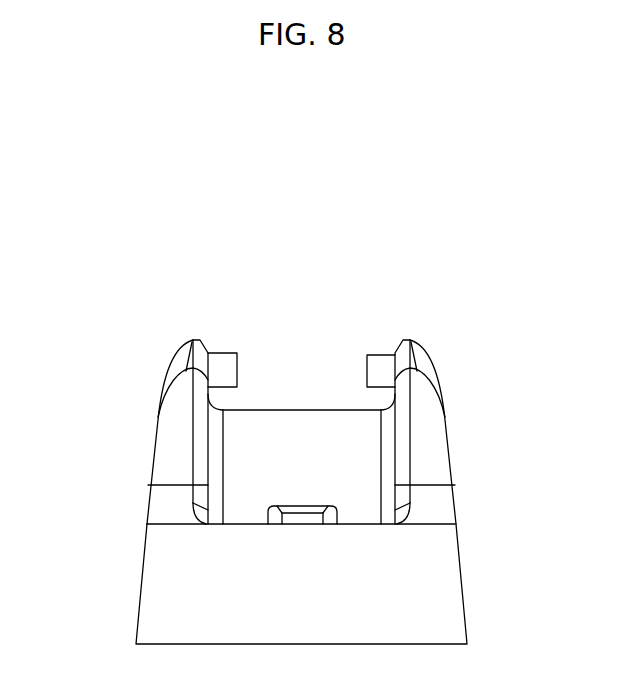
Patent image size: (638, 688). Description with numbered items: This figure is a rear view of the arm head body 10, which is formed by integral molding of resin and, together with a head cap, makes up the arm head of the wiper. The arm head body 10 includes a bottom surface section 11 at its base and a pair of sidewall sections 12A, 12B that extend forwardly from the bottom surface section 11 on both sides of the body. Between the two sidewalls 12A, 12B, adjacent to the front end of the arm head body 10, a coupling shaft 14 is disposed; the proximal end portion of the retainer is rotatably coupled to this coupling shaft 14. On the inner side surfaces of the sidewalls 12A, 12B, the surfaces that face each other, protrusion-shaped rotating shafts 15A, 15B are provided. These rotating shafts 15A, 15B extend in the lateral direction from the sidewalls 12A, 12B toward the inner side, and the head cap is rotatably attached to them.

The arm head body 10 is at (364, 285).
The bottom surface section 11 is at (400, 585).
The sidewall section 12A is at (447, 418).
The sidewall section 12B is at (155, 433).
The coupling shaft 14 is at (295, 409).
The rotating shaft 15A is at (383, 355).
The rotating shaft 15B is at (230, 353).